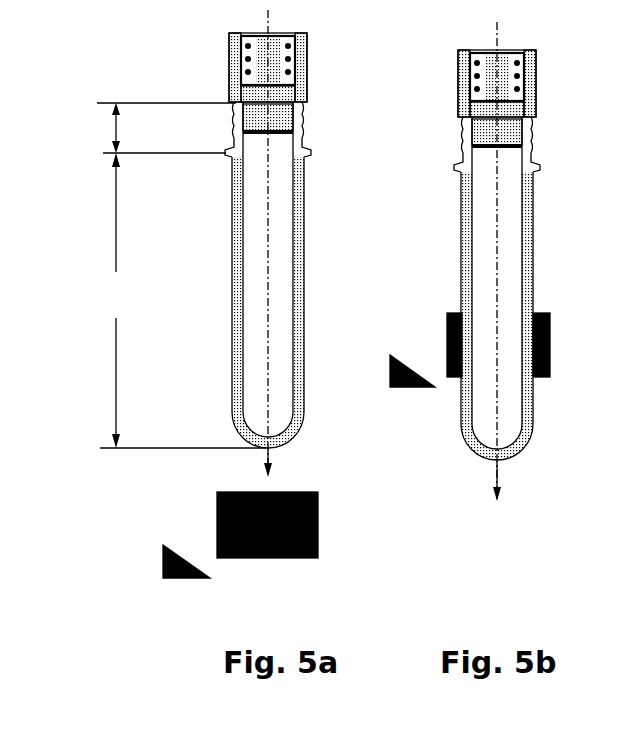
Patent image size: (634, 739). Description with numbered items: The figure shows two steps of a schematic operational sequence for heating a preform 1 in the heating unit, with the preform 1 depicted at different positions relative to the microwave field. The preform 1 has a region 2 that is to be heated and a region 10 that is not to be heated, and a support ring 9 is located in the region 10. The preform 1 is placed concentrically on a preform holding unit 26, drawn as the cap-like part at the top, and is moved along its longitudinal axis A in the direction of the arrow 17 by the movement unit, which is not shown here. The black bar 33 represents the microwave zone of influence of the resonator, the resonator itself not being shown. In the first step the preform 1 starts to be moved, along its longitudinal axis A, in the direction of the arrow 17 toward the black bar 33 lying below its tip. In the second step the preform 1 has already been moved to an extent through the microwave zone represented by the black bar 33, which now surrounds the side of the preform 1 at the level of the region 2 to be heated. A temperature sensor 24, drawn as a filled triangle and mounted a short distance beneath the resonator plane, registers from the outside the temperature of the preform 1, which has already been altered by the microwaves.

In FIG. 5a, the preform 1 is at (305, 302).
In FIG. 5b, the preform 1 is at (462, 256).
In FIG. 5a, the region to be heated 2 is at (183, 300).
In FIG. 5a, the support ring 9 is at (309, 148).
In FIG. 5a, the region not to be heated 10 is at (116, 131).
In FIG. 5a, the arrow 17 is at (272, 466).
In FIG. 5a, the temperature sensor 24 is at (200, 576).
In FIG. 5b, the temperature sensor 24 is at (415, 387).
In FIG. 5a, the preform holding unit 26 is at (306, 68).
In FIG. 5b, the preform holding unit 26 is at (536, 84).
In FIG. 5a, the black bar 33 is at (318, 518).
In FIG. 5b, the black bar 33 is at (550, 360).
In FIG. 5a, the longitudinal axis A is at (268, 222).
In FIG. 5b, the longitudinal axis A is at (497, 218).